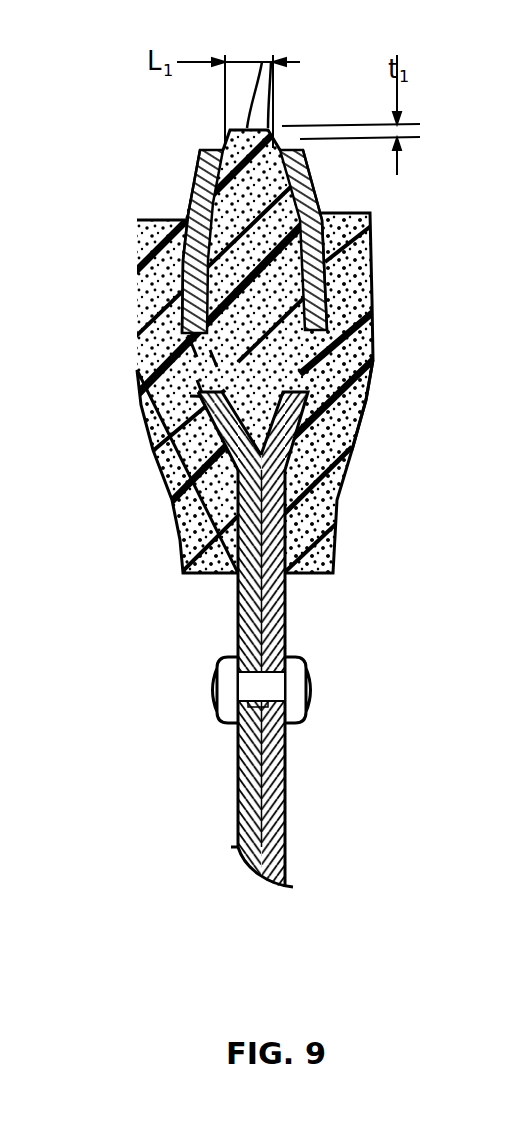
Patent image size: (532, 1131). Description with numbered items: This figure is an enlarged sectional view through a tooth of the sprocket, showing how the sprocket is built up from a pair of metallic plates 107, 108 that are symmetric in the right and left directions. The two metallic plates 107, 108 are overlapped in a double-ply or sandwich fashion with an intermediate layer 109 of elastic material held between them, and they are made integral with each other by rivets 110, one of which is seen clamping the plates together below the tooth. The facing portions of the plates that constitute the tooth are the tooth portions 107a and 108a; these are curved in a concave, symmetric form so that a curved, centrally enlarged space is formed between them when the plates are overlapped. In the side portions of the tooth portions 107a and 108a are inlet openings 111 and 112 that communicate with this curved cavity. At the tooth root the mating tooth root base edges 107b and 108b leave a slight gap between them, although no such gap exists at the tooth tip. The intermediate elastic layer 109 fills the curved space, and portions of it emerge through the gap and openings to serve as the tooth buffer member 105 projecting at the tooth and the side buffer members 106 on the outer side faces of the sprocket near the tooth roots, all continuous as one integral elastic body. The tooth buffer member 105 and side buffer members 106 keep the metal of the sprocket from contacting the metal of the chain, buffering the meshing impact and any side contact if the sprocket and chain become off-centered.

The tooth buffer member 105 is at (258, 52).
The side buffer member 106 is at (137, 317).
The metallic plate 107 is at (237, 770).
The tooth portion 107a is at (190, 207).
The tooth root base edge 107b is at (213, 147).
The metallic plate 108 is at (290, 763).
The tooth portion 108a is at (320, 196).
The tooth root base edge 108b is at (291, 147).
The intermediate layer 109 is at (292, 262).
The rivet 110 is at (307, 690).
The inlet opening 111 is at (133, 374).
The inlet opening 112 is at (377, 370).